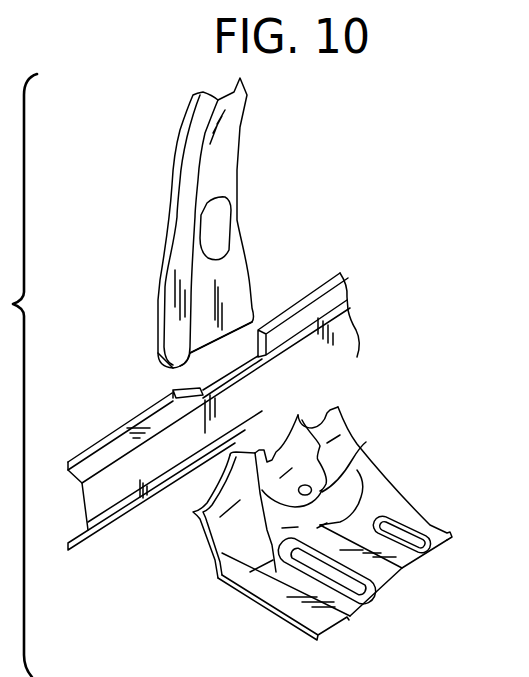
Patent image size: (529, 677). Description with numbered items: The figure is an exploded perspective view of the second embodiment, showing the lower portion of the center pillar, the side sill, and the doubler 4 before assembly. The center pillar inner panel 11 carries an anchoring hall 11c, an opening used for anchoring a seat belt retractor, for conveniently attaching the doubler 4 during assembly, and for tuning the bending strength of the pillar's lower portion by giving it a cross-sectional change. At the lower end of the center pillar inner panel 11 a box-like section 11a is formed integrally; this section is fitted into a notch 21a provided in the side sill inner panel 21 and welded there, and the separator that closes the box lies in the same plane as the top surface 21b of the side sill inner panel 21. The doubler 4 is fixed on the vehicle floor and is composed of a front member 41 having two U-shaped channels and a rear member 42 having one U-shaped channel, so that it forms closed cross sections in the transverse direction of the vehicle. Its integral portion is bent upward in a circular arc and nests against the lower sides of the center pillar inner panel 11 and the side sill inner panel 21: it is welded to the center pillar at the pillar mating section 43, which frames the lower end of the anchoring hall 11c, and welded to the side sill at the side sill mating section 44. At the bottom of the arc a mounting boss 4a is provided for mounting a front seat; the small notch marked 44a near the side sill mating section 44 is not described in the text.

The center pillar inner panel 11 is at (220, 157).
The box-like section 11a is at (240, 303).
The anchoring hall 11c is at (217, 225).
The side sill inner panel 21 is at (127, 468).
The notch 21a is at (213, 380).
The top surface 21b is at (337, 292).
The doubler 4 is at (315, 519).
The mounting boss 4a is at (363, 445).
The front member 41 is at (433, 528).
The rear member 42 is at (305, 605).
The pillar mating section 43 is at (288, 462).
The side sill mating section 44 is at (205, 507).
The notch of bracket flange 44a is at (322, 426).